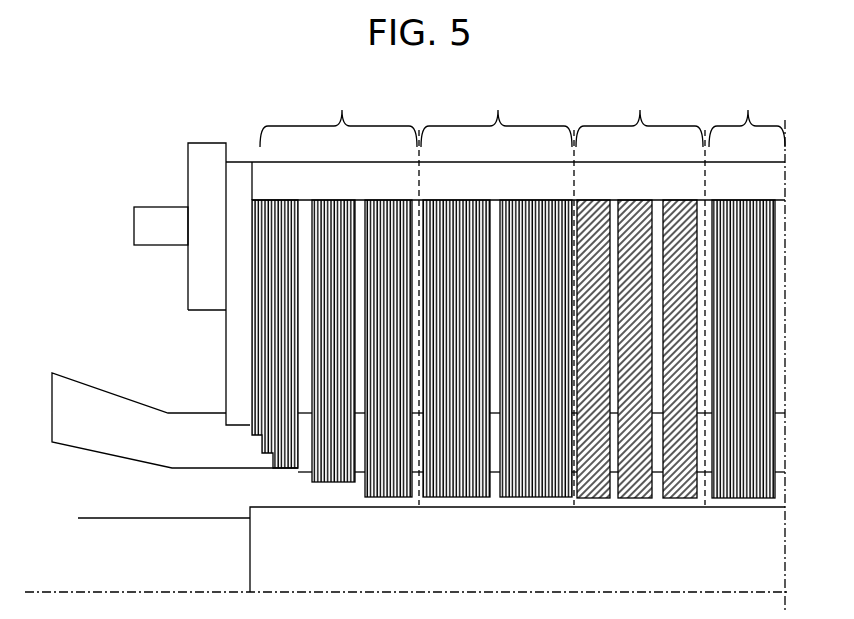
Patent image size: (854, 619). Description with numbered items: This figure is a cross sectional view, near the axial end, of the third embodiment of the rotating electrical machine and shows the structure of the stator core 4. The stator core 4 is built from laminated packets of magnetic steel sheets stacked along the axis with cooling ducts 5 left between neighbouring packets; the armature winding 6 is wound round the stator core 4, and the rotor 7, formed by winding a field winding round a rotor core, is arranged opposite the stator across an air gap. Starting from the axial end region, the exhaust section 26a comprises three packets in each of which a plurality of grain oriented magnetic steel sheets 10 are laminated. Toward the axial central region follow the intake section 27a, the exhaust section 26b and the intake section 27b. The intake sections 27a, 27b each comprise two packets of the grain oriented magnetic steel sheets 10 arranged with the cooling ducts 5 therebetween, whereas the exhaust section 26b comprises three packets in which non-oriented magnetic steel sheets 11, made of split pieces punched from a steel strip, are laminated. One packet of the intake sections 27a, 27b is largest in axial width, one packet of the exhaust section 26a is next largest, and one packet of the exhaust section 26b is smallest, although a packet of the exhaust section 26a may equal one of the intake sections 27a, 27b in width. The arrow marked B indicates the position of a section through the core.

The stator core 4 is at (767, 290).
The cooling ducts 5 is at (358, 450).
The armature winding 6 is at (108, 422).
The rotor 7 is at (270, 555).
The grain oriented magnetic steel sheets 10 is at (262, 225).
The non-oriented magnetic steel sheets 11 is at (627, 482).
The exhaust section 26a is at (339, 292).
The intake section 27a is at (497, 292).
The exhaust section 26b is at (640, 292).
The intake section 27b is at (747, 113).
The section line B is at (571, 505).